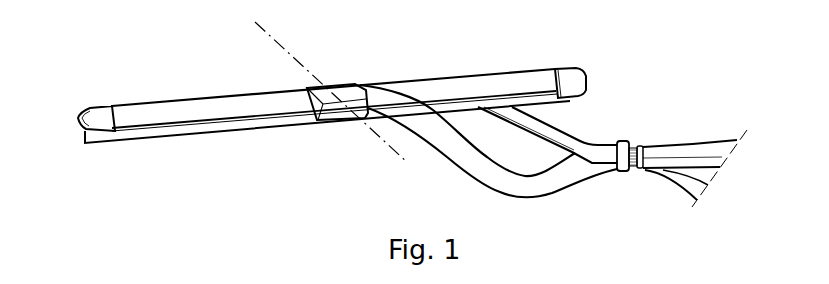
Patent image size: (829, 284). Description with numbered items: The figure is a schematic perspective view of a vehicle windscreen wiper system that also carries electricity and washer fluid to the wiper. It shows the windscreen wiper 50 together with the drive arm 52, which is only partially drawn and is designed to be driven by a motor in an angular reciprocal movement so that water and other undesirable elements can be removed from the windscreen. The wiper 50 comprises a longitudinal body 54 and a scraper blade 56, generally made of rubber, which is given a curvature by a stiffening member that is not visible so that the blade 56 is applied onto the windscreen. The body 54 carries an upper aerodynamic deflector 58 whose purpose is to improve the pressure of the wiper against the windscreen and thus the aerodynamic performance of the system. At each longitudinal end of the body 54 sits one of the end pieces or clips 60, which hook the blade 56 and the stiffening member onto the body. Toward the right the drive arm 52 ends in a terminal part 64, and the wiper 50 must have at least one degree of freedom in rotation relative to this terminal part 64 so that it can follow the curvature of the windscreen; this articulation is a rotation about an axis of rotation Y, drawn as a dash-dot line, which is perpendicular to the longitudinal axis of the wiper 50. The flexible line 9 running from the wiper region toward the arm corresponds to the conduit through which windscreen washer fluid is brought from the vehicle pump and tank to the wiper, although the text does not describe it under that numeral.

The windscreen wiper 50 is at (507, 50).
The drive arm 52 is at (715, 134).
The longitudinal body 54 is at (157, 113).
The scraper blade 56 is at (213, 132).
The upper aerodynamic deflector 58 is at (230, 95).
The end pieces or clips 60 is at (83, 108).
The terminal part of the arm 64 is at (338, 90).
The fluid hose 9 is at (522, 190).
The axis of rotation Y is at (377, 137).